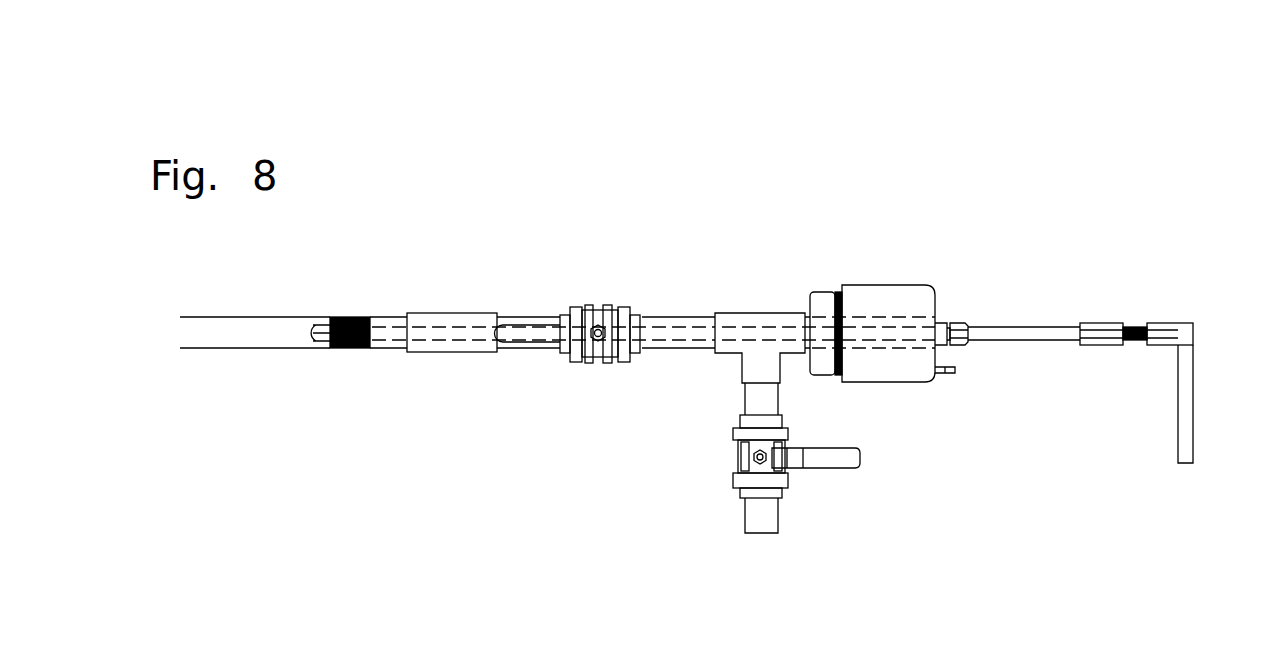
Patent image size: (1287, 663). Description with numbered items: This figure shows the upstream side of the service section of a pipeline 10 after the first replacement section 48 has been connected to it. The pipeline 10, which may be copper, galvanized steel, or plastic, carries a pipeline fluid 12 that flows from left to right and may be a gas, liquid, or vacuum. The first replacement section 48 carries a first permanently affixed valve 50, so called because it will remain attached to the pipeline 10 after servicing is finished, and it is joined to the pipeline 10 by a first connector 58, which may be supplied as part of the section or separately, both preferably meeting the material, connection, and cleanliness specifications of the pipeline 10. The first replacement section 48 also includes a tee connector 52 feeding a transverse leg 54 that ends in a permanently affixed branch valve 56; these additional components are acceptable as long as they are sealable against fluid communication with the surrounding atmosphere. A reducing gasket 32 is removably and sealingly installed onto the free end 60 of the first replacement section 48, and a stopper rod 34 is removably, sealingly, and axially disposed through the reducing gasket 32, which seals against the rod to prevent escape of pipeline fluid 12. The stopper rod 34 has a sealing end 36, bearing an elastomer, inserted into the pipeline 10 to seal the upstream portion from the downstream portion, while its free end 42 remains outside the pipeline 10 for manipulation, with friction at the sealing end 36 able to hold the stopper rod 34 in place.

The pipeline 10 is at (230, 315).
The pipeline fluid 12 is at (214, 344).
The reducing gasket 32 is at (877, 285).
The stopper rod 34 is at (1121, 308).
The sealing end 36 is at (350, 315).
The free end 42 is at (1182, 463).
The first replacement section 48 is at (677, 303).
The first permanently affixed valve 50 is at (597, 305).
The tee connector 52 is at (757, 313).
The transverse leg 54 is at (740, 398).
The permanently affixed branch valve 56 is at (733, 455).
The first connector 58 is at (452, 313).
The free end of the first replacement section 60 is at (940, 302).